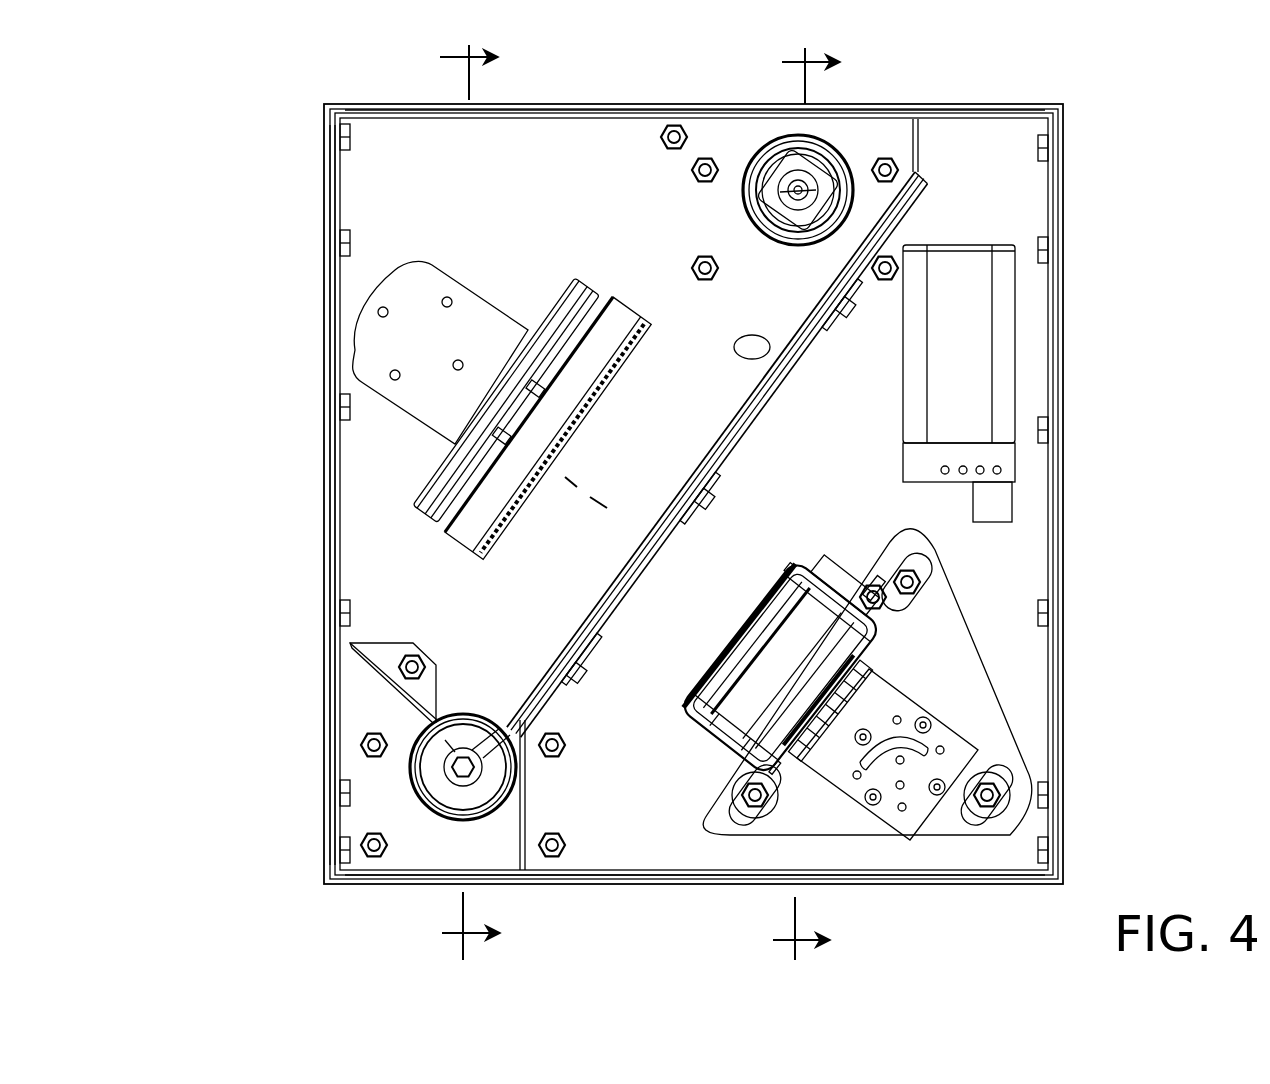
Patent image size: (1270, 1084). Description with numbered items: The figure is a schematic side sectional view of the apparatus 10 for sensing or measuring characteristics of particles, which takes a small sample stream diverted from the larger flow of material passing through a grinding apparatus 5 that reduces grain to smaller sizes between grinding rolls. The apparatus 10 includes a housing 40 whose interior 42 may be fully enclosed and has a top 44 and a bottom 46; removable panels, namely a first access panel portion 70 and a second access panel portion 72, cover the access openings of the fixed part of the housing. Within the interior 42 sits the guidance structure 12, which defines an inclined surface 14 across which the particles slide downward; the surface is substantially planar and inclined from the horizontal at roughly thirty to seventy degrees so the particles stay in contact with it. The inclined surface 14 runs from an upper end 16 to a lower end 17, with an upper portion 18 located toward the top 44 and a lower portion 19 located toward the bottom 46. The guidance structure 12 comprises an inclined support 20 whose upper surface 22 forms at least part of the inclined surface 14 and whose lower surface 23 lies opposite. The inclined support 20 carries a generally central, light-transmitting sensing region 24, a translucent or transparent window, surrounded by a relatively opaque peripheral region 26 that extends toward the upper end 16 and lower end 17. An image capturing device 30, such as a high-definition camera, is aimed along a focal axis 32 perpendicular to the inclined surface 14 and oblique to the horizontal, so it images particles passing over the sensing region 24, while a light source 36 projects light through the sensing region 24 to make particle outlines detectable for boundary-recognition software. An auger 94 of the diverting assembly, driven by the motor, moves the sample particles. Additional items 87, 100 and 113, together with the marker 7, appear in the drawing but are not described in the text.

The apparatus 10 is at (705, 474).
The guidance structure 12 is at (555, 605).
The inclined surface 14 is at (560, 637).
The upper end 16 is at (897, 266).
The lower end 17 is at (440, 722).
The upper portion 18 is at (797, 282).
The lower portion 19 is at (520, 685).
The inclined support 20 is at (735, 413).
The upper surface 22 is at (765, 335).
The lower surface 23 is at (760, 395).
The sensing region 24 is at (637, 532).
The peripheral region 26 is at (625, 600).
The image capturing device 30 is at (517, 407).
The focal axis 32 is at (560, 473).
The light source 36 is at (880, 637).
The housing 40 is at (285, 155).
The interior 42 is at (383, 175).
The top 44 is at (445, 140).
The bottom 46 is at (415, 855).
The access panel portion 70 is at (326, 471).
The second access panel portion 72 is at (1056, 371).
The upper roller 87 is at (798, 190).
The auger 94 is at (815, 195).
The roller hub 100 is at (800, 190).
The lower roller 113 is at (463, 812).
The grinding apparatus 5 is at (820, 509).
The section line 7 is at (482, 506).